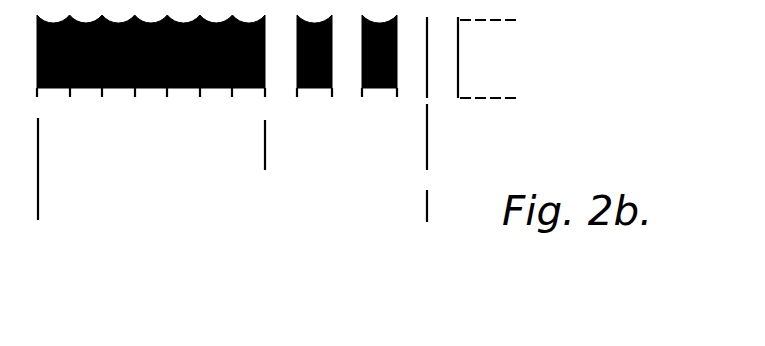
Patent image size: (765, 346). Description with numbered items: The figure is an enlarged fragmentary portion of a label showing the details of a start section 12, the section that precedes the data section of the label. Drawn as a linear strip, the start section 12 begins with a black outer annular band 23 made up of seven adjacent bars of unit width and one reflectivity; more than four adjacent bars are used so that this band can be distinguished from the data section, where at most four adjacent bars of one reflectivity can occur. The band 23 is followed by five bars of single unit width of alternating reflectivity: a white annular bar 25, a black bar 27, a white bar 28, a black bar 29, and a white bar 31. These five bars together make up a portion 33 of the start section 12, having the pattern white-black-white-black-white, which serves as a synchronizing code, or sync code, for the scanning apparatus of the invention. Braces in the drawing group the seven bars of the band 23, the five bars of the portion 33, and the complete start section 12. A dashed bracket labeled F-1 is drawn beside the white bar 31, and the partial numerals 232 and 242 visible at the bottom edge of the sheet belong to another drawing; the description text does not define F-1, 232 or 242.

The start section 12 is at (427, 222).
The black outer annular band 23 is at (265, 100).
The white annular bar 25 is at (285, 77).
The black bar 27 is at (314, 89).
The white bar 28 is at (345, 75).
The black bar 29 is at (380, 89).
The white bar 31 is at (412, 75).
The portion of start section 33 is at (427, 172).
The frame region F-1 is at (443, 75).
The partial numeral of adjacent figure 232 is at (44, 334).
The partial numeral of adjacent figure 242 is at (123, 334).